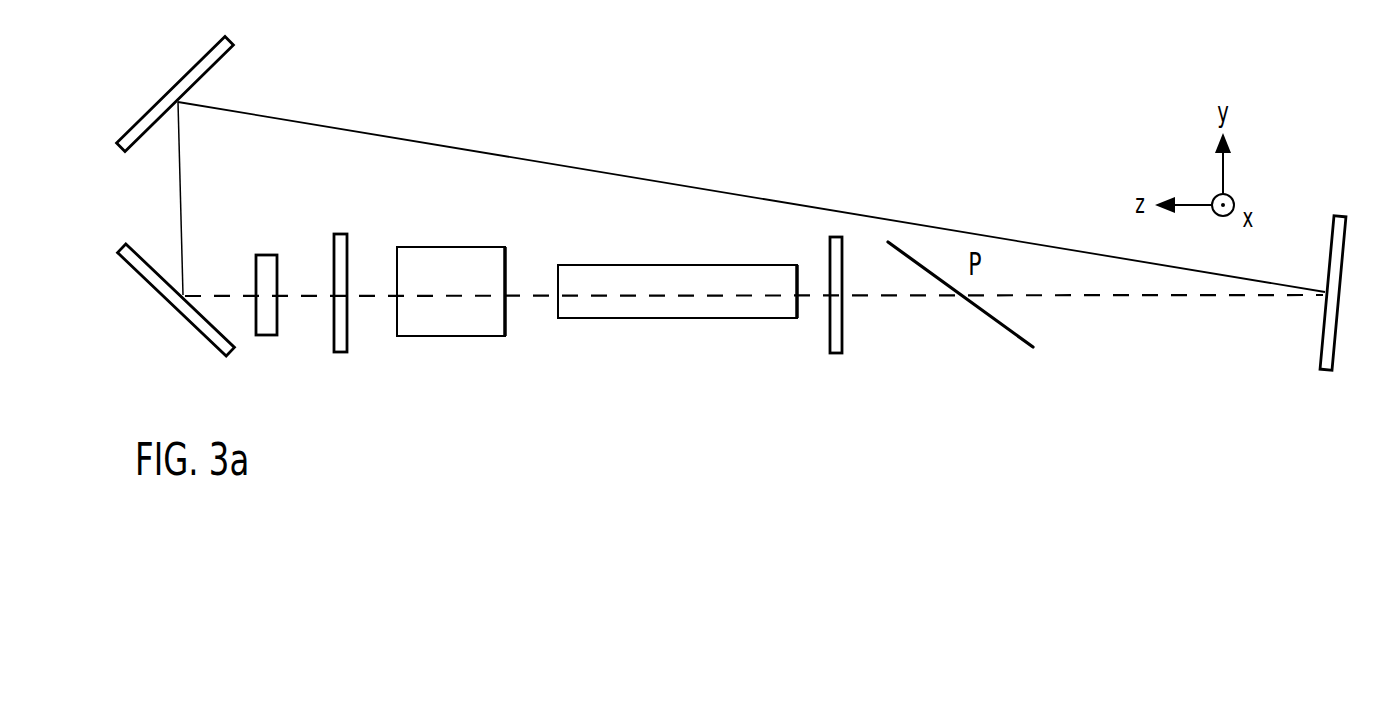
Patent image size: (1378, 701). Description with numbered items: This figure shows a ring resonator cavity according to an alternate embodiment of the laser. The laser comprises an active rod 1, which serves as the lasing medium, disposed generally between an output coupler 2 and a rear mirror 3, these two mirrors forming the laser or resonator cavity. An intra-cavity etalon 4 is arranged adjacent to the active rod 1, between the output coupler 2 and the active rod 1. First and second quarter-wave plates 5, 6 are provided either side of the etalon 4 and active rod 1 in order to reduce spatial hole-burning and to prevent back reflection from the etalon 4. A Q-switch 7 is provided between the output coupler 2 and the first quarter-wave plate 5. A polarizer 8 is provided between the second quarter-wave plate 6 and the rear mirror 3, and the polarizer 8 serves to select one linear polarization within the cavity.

The active rod 1 is at (677, 312).
The output coupler 2 is at (176, 225).
The rear mirror 3 is at (1333, 314).
The intra-cavity etalon 4 is at (451, 311).
The first quarter-wave plate 5 is at (341, 314).
The second quarter-wave plate 6 is at (835, 317).
The Q-switch 7 is at (266, 317).
The polarizer 8 is at (960, 300).